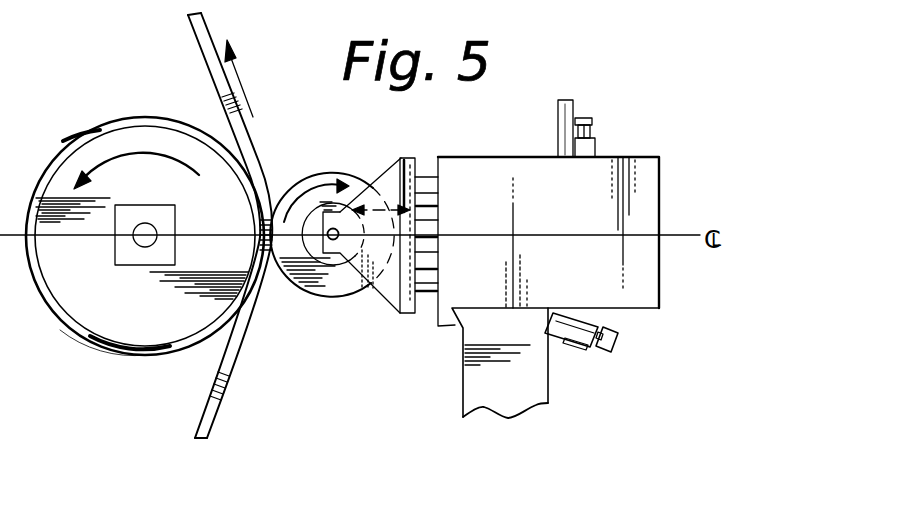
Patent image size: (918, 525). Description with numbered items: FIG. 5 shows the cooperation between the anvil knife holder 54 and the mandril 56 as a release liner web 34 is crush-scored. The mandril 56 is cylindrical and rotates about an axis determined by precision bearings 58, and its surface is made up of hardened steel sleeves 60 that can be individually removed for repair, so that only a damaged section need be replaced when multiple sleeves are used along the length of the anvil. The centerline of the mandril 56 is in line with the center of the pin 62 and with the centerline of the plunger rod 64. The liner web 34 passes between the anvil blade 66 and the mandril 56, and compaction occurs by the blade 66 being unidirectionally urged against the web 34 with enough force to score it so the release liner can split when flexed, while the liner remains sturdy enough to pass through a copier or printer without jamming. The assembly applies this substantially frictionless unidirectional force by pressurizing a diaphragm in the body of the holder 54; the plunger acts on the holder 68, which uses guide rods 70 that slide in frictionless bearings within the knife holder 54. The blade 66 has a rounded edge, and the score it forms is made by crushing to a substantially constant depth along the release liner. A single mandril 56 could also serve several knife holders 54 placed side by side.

The release liner web 34 is at (226, 394).
The anvil knife holder 54 is at (678, 216).
The mandril 56 is at (111, 358).
The precision bearings 58 is at (138, 246).
The hardened steel sleeves 60 is at (132, 117).
The pin 62 is at (333, 241).
The plunger rod 64 is at (420, 234).
The anvil blade 66 is at (303, 294).
The holder 68 is at (391, 290).
The guide rods 70 is at (425, 185).